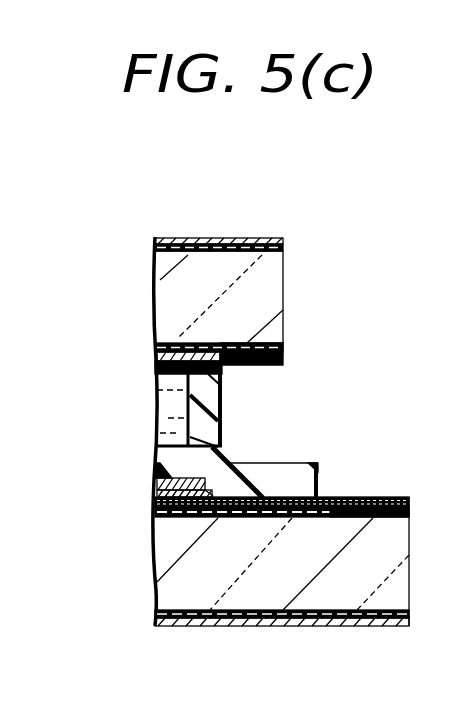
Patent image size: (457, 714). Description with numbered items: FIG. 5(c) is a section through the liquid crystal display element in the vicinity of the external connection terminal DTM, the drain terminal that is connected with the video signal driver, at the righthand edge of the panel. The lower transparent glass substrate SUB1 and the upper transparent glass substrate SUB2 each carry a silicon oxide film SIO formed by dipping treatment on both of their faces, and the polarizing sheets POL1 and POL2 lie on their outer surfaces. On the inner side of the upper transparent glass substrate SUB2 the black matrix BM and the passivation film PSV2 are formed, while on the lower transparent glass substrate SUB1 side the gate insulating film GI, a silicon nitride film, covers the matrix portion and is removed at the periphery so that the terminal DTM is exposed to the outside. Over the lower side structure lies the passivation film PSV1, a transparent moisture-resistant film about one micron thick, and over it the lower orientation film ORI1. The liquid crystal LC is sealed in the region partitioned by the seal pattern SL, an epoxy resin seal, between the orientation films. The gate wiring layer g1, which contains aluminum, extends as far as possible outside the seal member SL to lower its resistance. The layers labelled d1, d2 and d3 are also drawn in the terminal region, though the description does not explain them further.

The polarizing sheet POL2 is at (178, 238).
The silicon oxide film SIO is at (155, 248).
The upper transparent glass substrate SUB2 is at (170, 281).
The black matrix BM is at (155, 355).
The passivation film PSV2 is at (155, 369).
The liquid crystal layer LC is at (165, 410).
The seal pattern SL is at (207, 418).
The lower orientation film ORI1 is at (155, 447).
The passivation film PSV1 is at (177, 462).
The third conductive layer d3 is at (168, 468).
The drain terminal DTM is at (341, 484).
The second conductive layer d2 is at (216, 517).
The gate insulating film GI is at (0, 508).
The gate wiring layer g1 is at (398, 497).
The first conductive layer d1 is at (380, 497).
The lower transparent glass substrate SUB1 is at (152, 568).
The polarizing sheet POL1 is at (152, 628).